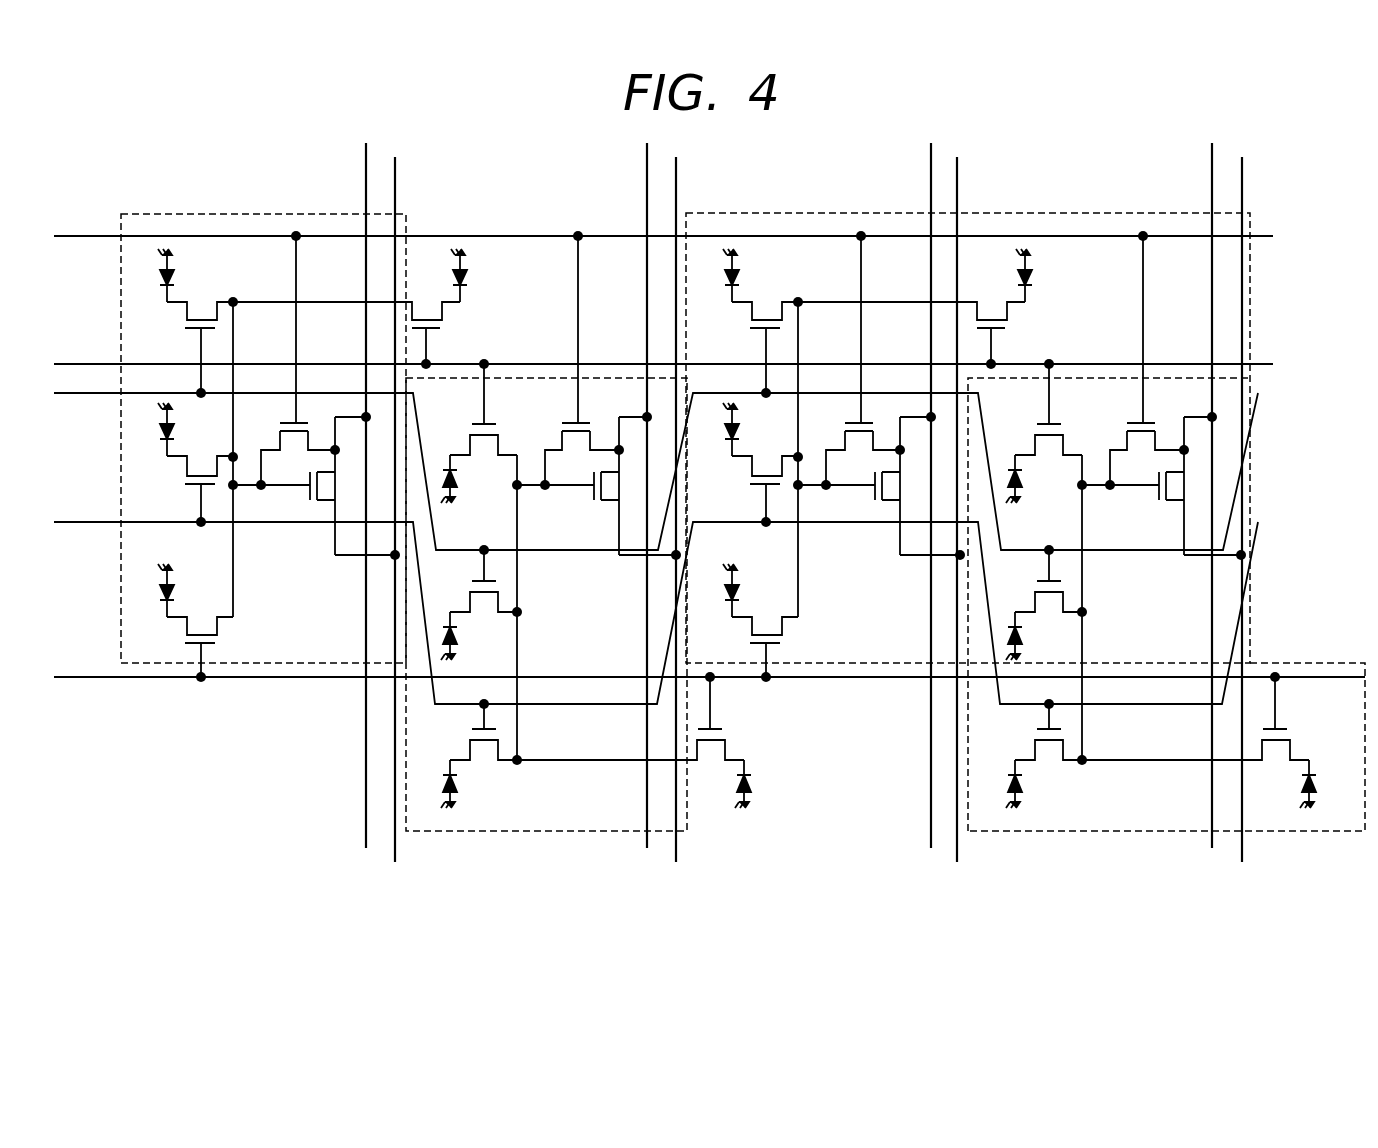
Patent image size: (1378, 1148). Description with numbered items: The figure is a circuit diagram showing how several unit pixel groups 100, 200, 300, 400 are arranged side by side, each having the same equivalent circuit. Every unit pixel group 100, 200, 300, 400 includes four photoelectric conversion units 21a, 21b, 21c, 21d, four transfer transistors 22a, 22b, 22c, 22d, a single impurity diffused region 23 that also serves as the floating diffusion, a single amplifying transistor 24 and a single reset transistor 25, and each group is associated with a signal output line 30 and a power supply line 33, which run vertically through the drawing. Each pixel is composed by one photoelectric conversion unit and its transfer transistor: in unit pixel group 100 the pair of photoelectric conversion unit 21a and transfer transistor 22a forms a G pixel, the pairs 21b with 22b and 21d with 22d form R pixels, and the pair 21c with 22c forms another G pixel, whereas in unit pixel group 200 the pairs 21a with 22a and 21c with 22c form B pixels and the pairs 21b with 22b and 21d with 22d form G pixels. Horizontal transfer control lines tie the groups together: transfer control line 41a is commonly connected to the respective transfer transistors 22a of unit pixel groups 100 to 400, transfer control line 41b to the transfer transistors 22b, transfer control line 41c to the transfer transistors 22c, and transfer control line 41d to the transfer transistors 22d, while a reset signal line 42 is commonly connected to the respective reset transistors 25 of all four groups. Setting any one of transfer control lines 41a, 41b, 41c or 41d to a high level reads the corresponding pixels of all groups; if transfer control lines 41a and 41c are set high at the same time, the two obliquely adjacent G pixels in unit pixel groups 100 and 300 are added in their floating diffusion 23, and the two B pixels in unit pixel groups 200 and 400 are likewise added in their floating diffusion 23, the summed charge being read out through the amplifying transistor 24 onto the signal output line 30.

The unit pixel group 100 is at (255, 212).
The unit pixel group 200 is at (552, 832).
The unit pixel group 300 is at (820, 212).
The unit pixel group 400 is at (1117, 832).
The signal output line 30 is at (395, 177).
The power supply line 33 is at (366, 766).
The reset signal line 42 is at (95, 237).
The transfer control line 41a is at (70, 362).
The transfer control line 41b is at (93, 397).
The transfer control line 41c is at (93, 526).
The transfer control line 41d is at (93, 681).
The photoelectric conversion unit 21a is at (467, 289).
The photoelectric conversion unit 21b is at (161, 289).
The photoelectric conversion unit 21c is at (161, 447).
The photoelectric conversion unit 21d is at (161, 607).
The transfer transistor 22a is at (431, 312).
The transfer transistor 22b is at (198, 310).
The transfer transistor 22c is at (198, 466).
The transfer transistor 22d is at (198, 622).
The impurity diffused region 23 is at (273, 493).
The amplifying transistor 24 is at (327, 506).
The reset transistor 25 is at (281, 442).